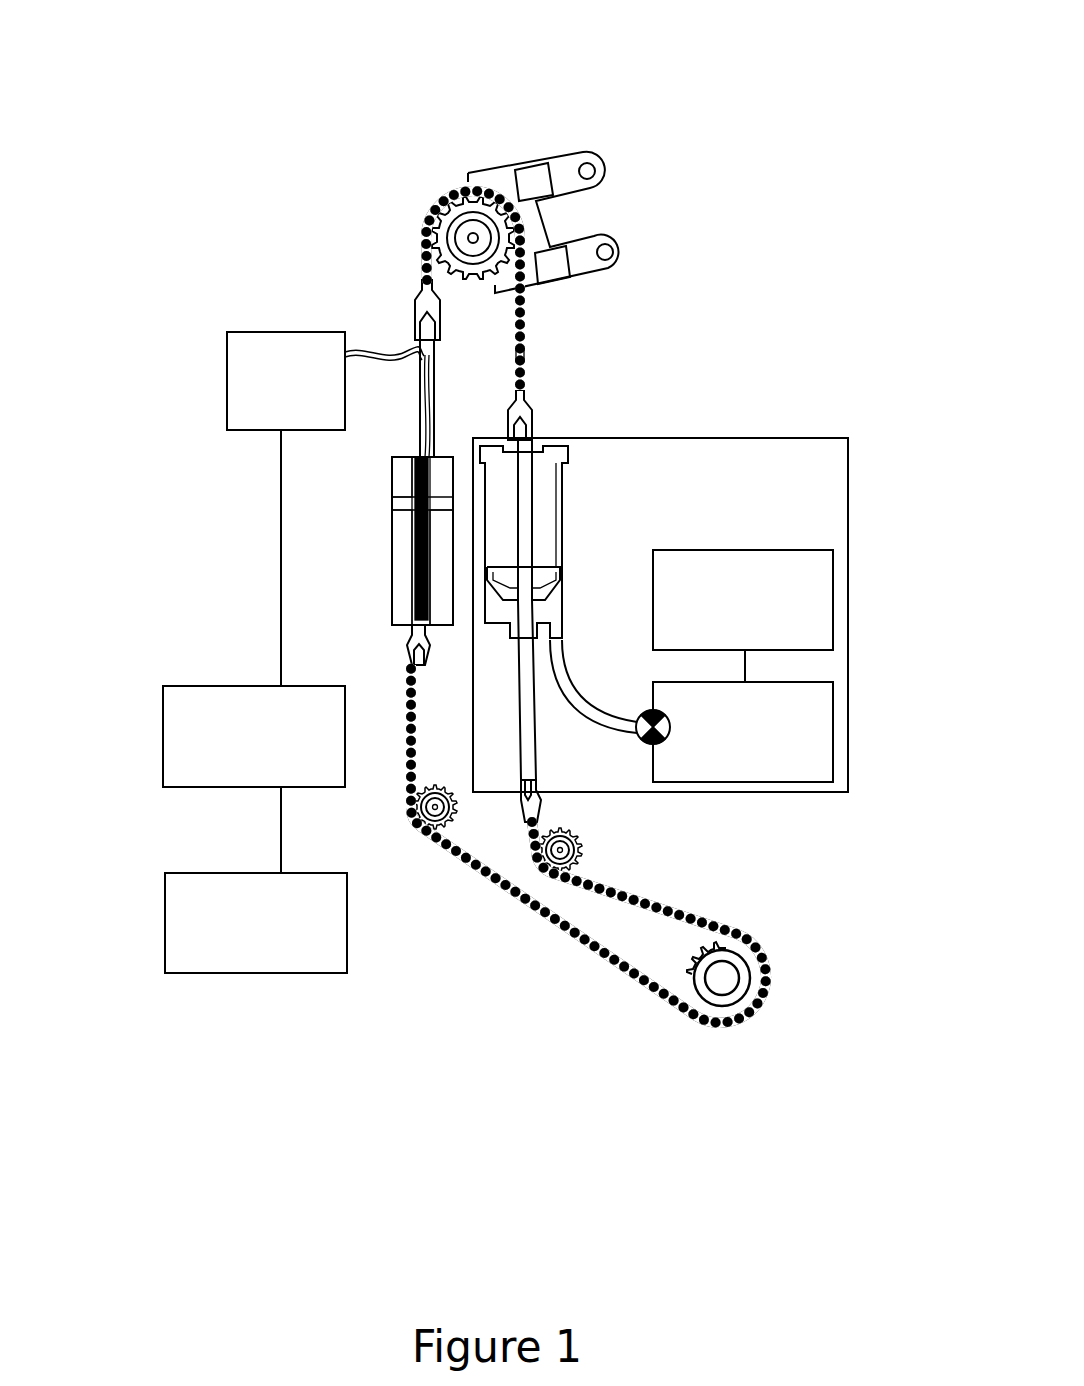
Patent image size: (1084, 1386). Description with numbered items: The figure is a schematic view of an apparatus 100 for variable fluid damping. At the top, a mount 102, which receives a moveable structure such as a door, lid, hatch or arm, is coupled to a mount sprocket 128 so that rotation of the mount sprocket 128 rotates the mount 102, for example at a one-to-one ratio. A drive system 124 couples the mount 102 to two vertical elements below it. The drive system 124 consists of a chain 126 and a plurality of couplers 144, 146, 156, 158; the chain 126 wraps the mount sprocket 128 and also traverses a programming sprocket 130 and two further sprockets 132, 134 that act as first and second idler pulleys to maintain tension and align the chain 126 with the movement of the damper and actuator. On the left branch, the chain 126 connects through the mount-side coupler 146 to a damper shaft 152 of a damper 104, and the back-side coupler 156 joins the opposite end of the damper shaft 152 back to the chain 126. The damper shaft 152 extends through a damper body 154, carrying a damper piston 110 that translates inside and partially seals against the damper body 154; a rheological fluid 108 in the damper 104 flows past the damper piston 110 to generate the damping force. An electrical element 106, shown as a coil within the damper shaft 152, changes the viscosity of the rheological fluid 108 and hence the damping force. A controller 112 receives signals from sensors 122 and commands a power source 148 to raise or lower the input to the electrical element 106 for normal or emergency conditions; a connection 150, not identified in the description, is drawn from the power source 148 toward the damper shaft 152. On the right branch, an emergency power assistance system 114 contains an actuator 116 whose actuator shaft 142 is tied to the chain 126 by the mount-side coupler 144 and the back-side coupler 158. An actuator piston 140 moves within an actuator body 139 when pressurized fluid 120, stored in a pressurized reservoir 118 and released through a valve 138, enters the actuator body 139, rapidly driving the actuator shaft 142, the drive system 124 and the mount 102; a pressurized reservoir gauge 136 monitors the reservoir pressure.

The apparatus 100 is at (152, 42).
The mount 102 is at (622, 250).
The damper 104 is at (386, 475).
The electrical element 106 is at (414, 537).
The rheological fluid 108 is at (398, 613).
The damper piston 110 is at (398, 505).
The controller 112 is at (163, 737).
The emergency power assistance system 114 is at (858, 455).
The actuator 116 is at (572, 535).
The pressurized reservoir 118 is at (833, 738).
The pressurized fluid 120 is at (572, 675).
The sensors 122 is at (165, 920).
The drive system 124 is at (537, 320).
The chain 126 is at (533, 355).
The mount sprocket 128 is at (468, 238).
The programming sprocket 130 is at (722, 978).
The sprocket 132 is at (560, 850).
The sprocket 134 is at (435, 807).
The pressurized reservoir gauge 136 is at (833, 595).
The valve 138 is at (648, 745).
The actuator body 139 is at (563, 493).
The actuator piston 140 is at (557, 576).
The actuator shaft 142 is at (524, 484).
The coupler 144 is at (534, 408).
The coupler 146 is at (422, 292).
The power source 148 is at (227, 375).
The power wire 150 is at (376, 352).
The damper shaft 152 is at (418, 407).
The damper body 154 is at (392, 575).
The coupler 156 is at (406, 660).
The coupler 158 is at (528, 807).